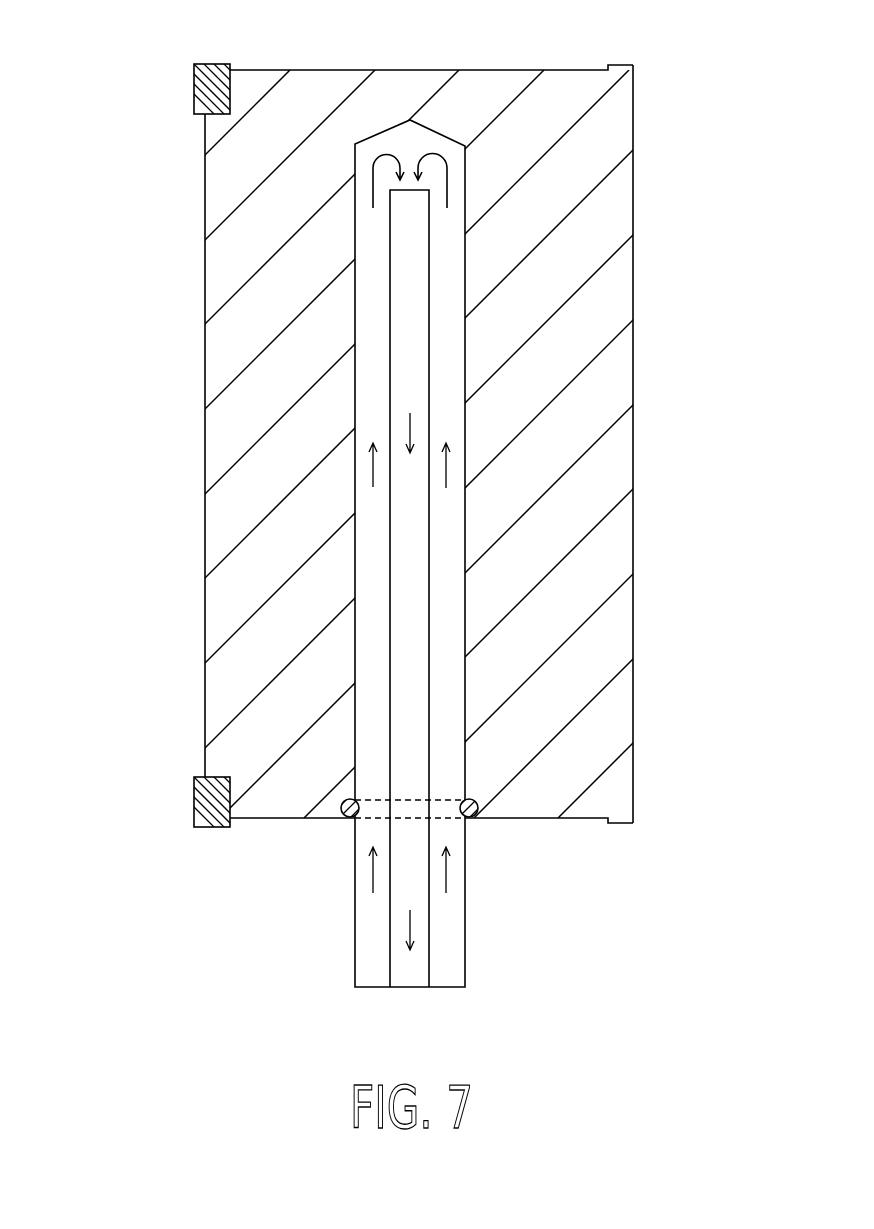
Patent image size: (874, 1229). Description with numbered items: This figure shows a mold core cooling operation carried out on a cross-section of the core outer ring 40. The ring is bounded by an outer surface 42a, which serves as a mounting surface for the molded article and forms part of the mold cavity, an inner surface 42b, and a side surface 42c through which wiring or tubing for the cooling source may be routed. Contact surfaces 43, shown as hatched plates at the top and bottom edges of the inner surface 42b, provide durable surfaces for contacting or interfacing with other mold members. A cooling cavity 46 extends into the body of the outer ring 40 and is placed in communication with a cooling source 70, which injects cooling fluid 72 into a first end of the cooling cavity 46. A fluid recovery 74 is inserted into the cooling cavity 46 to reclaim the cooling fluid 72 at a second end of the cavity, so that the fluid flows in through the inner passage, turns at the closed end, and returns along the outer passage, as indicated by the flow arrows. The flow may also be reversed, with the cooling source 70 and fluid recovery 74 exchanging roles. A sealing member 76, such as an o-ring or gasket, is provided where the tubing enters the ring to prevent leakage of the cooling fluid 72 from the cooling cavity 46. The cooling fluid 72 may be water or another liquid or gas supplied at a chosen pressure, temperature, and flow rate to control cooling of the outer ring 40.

The core outer ring 40 is at (91, 170).
The outer surface 42a is at (633, 283).
The inner surface 42b is at (205, 435).
The side surface 42c is at (317, 70).
The contact surface 43 is at (194, 83).
The cooling cavity 46 is at (467, 168).
The cooling source 70 is at (355, 963).
The cooling fluid 72 is at (415, 381).
The fluid recovery 74 is at (430, 260).
The sealing member 76 is at (348, 820).